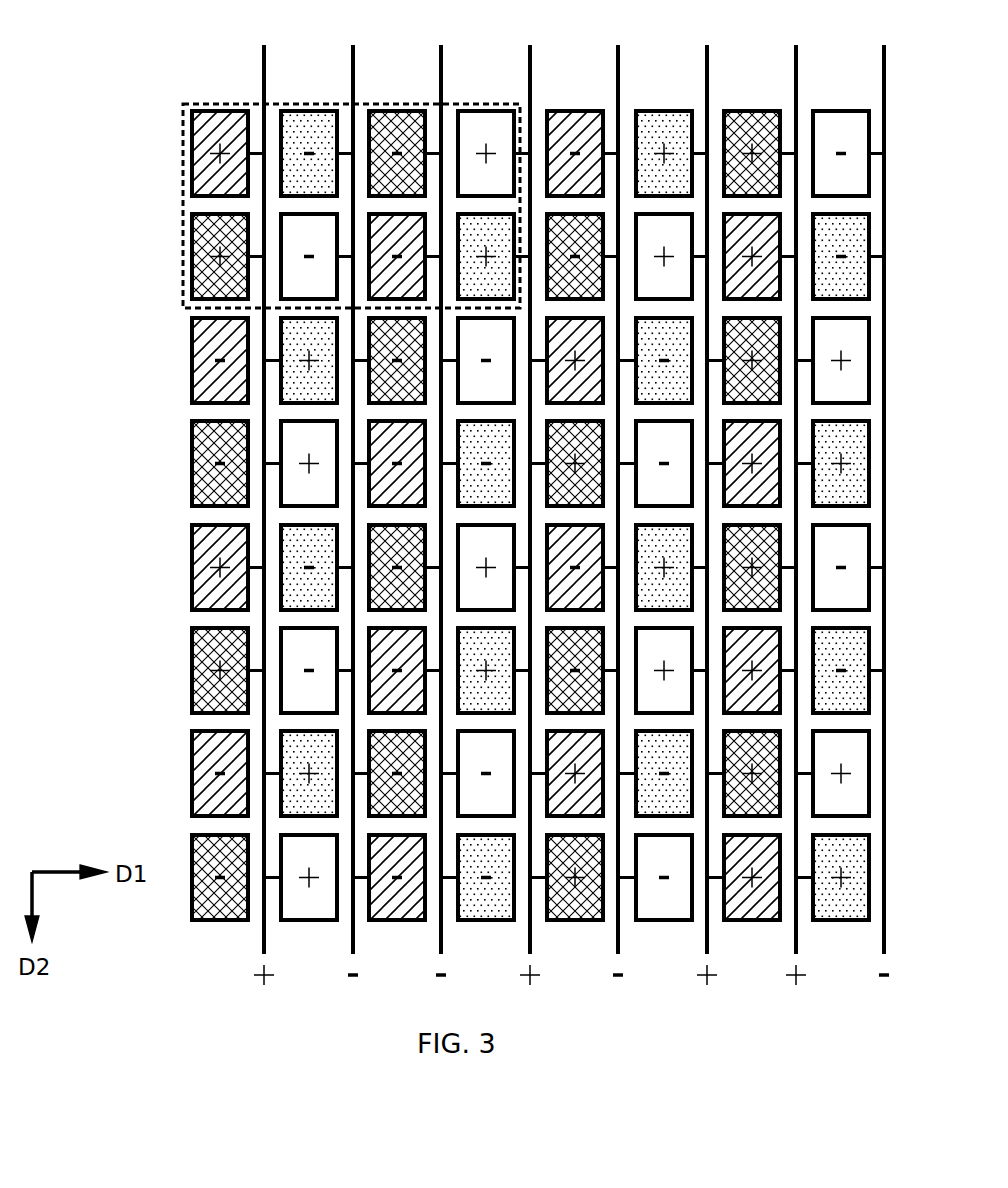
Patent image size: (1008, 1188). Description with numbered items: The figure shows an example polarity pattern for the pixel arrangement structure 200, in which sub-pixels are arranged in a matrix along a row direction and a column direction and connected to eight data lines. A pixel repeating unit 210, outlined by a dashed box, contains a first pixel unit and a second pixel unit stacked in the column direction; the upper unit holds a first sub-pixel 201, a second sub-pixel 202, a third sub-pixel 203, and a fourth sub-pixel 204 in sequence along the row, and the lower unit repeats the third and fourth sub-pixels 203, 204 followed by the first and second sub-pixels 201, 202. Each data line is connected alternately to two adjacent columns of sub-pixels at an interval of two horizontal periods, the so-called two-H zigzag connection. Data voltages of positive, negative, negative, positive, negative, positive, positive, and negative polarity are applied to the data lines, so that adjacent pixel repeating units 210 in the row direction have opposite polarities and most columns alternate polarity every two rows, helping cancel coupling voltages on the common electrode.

The pixel arrangement structure 200 is at (84, 44).
The first sub-pixel 201 is at (213, 107).
The second sub-pixel 202 is at (316, 107).
The third sub-pixel 203 is at (412, 107).
The fourth sub-pixel 204 is at (498, 107).
The pixel repeating unit 210 is at (182, 206).